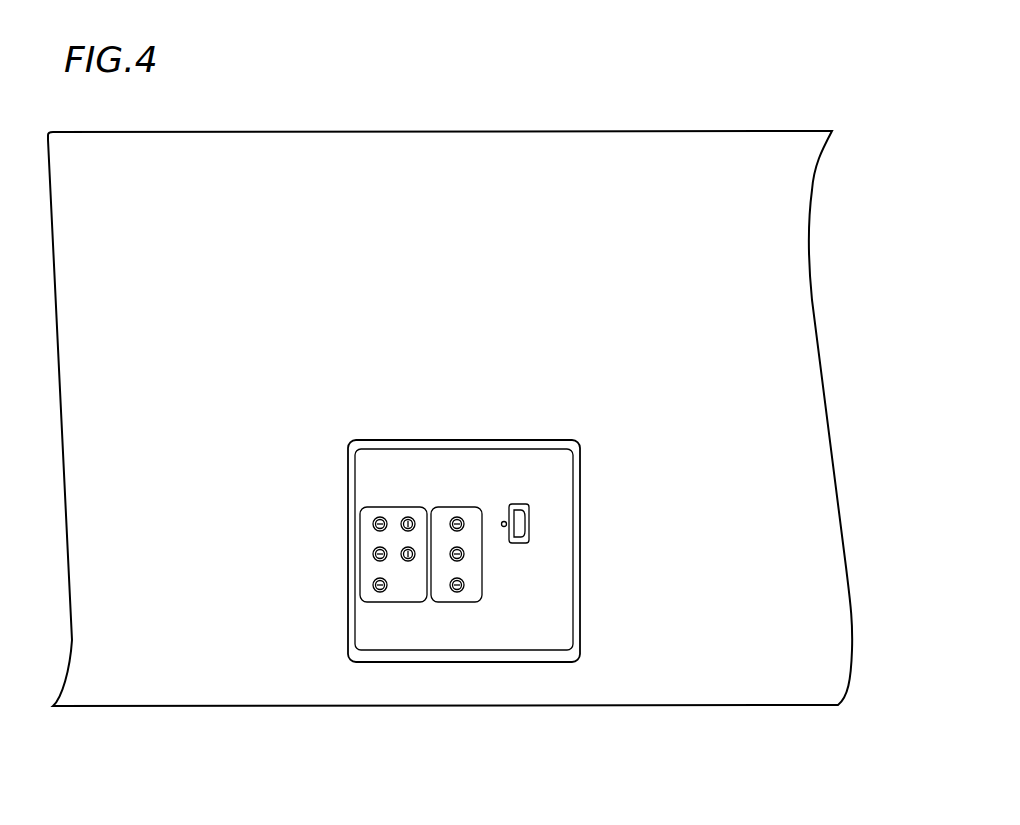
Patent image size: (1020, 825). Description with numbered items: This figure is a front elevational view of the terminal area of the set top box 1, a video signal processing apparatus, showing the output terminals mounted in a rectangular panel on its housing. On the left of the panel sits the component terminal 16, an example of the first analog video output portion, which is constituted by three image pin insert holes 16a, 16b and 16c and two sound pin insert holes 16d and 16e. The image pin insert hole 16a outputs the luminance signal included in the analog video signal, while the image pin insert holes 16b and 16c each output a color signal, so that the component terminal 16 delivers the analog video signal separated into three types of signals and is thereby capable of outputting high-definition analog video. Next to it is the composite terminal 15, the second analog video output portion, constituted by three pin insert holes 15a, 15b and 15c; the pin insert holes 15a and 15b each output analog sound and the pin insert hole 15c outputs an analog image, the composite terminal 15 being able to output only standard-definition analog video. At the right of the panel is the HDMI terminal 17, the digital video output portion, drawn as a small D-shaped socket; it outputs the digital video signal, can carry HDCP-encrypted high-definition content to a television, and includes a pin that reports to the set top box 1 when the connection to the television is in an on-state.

The set top box (STB) 1 is at (462, 131).
The composite terminal 15 is at (463, 494).
The pin insert hole 15a is at (461, 524).
The pin insert hole 15b is at (464, 557).
The pin insert hole 15c is at (457, 592).
The component terminal 16 is at (369, 497).
The image pin insert hole 16a is at (372, 527).
The image pin insert hole 16b is at (372, 556).
The image pin insert hole 16c is at (372, 586).
The sound pin insert hole 16d is at (407, 515).
The sound pin insert hole 16e is at (407, 561).
The HDMI terminal 17 is at (530, 528).